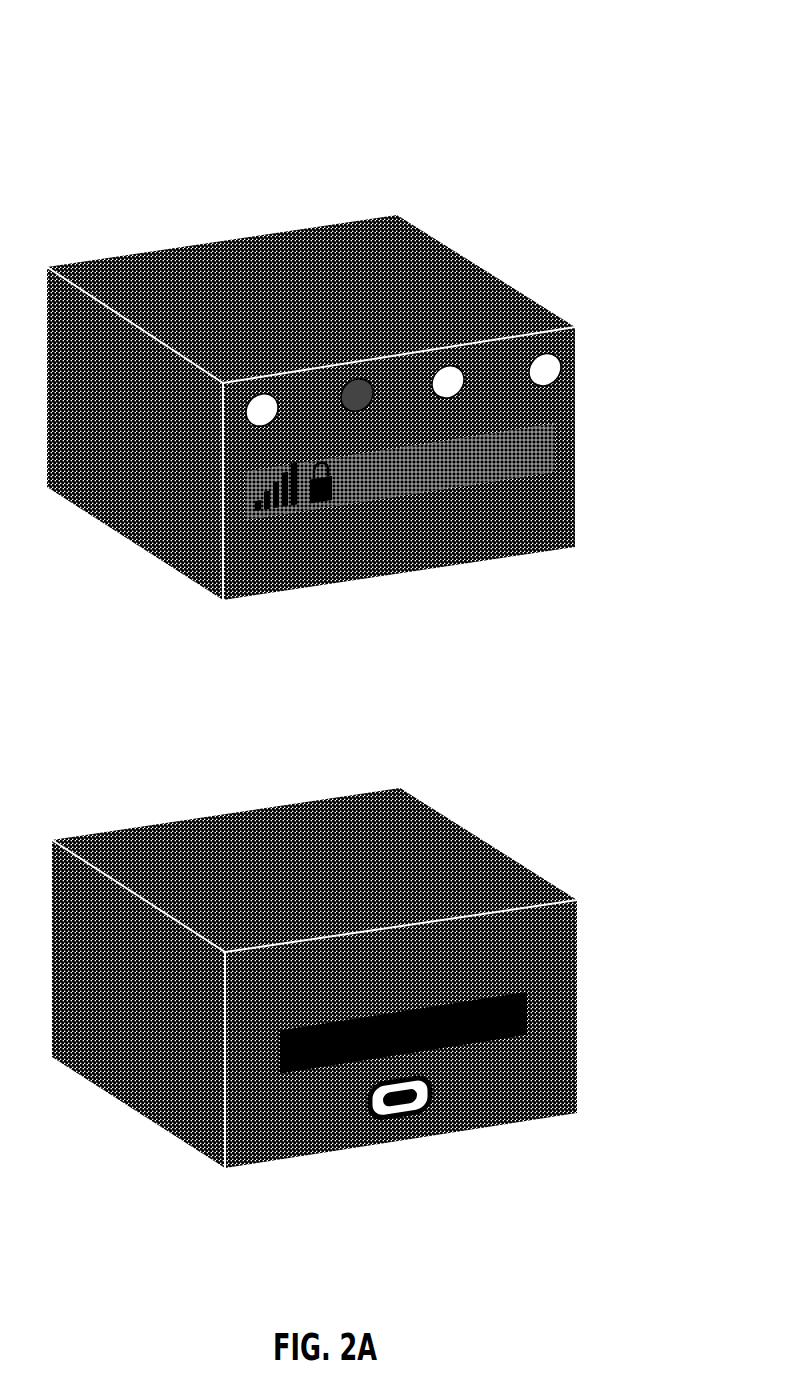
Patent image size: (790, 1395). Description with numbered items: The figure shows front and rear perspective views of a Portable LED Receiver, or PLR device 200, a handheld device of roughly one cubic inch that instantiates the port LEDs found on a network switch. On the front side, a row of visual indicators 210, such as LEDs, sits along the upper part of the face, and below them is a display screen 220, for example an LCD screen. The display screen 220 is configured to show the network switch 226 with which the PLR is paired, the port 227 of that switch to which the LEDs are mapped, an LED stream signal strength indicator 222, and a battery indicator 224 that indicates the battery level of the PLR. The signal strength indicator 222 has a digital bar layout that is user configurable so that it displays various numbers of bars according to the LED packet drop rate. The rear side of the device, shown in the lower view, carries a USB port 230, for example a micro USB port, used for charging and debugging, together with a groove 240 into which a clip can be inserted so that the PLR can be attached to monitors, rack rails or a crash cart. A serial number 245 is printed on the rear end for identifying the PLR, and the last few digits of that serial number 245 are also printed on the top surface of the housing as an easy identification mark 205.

The wireless switch device 200 is at (343, 13).
The identification mark 205 is at (395, 280).
The visual indicators 210 is at (548, 378).
The display screen 220 is at (550, 432).
The LED stream signal strength indicator 222 is at (293, 512).
The battery indicator 224 is at (337, 503).
The network switch 226 is at (473, 475).
The port 227 is at (543, 462).
The USB port 230 is at (392, 1120).
The groove 240 is at (535, 1006).
The serial number 245 is at (568, 942).